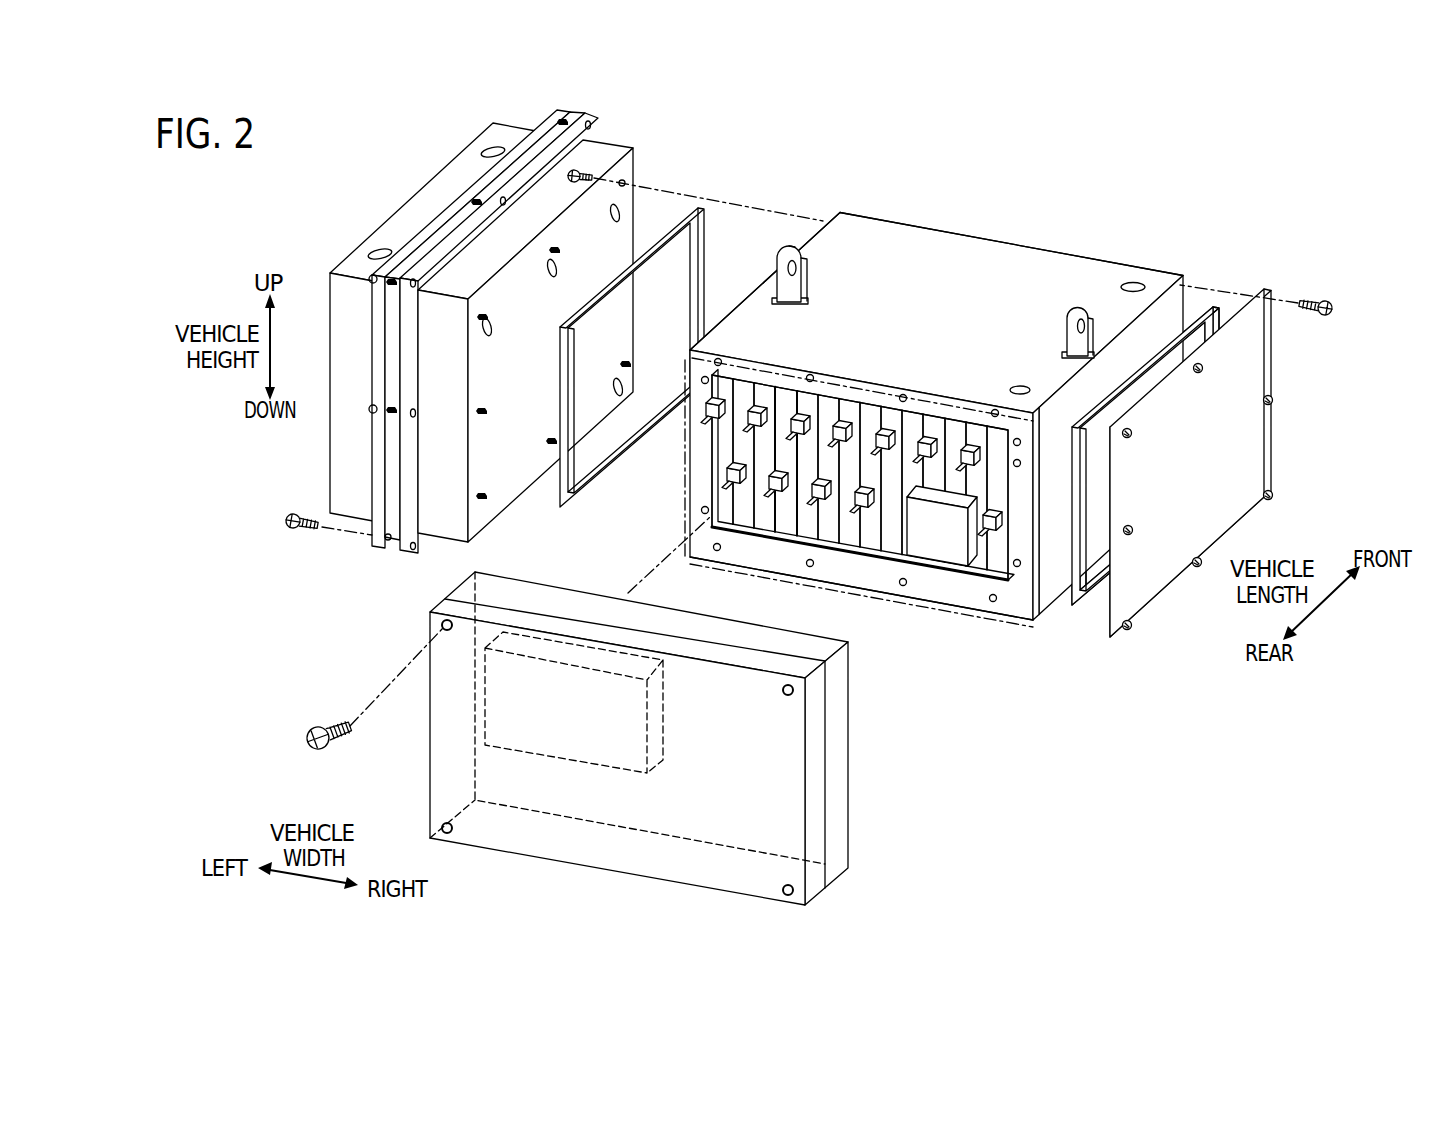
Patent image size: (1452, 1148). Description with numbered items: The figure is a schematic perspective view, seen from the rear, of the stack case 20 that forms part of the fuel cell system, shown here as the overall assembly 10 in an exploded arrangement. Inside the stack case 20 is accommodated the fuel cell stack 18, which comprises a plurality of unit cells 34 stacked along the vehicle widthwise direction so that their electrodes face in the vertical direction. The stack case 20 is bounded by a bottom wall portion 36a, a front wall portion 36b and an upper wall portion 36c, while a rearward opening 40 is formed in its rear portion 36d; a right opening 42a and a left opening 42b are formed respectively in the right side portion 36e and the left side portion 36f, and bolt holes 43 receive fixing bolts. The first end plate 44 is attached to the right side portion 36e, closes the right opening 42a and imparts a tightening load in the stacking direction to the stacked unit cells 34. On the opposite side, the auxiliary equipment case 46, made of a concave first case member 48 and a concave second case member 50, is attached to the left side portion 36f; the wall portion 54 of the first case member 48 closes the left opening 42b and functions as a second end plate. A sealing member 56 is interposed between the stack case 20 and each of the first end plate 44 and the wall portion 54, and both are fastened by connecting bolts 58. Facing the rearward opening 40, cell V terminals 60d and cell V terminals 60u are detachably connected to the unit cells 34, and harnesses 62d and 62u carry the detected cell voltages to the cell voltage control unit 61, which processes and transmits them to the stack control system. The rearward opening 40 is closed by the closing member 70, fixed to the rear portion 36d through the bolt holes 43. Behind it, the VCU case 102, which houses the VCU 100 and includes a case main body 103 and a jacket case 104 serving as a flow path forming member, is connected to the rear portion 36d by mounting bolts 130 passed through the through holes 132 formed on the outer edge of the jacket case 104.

The battery pack 10 is at (834, 390).
The fuel cell stack 18 is at (747, 400).
The stack case 20 is at (897, 416).
The unit cells 34 is at (880, 412).
The bottom wall portion 36a is at (902, 598).
The front wall portion 36b is at (992, 238).
The upper wall portion 36c is at (880, 238).
The rear portion 36d is at (700, 500).
The right side portion 36e is at (1052, 587).
The left side portion 36f is at (748, 297).
The rearward opening 40 is at (803, 392).
The right opening 42a is at (1117, 358).
The left opening 42b is at (820, 228).
The bolt holes 43 is at (700, 382).
The first end plate 44 is at (1250, 452).
The auxiliary equipment case 46 is at (481, 322).
The first case member 48 is at (548, 190).
The second case member 50 is at (502, 133).
The wall portion 54 is at (507, 478).
The sealing member 56 is at (700, 213).
The connecting bolts 58 is at (590, 160).
The cell V terminals 60u is at (972, 450).
The cell V terminals 60d is at (785, 478).
The cell voltage control unit 61 is at (957, 560).
The harnesses 62u is at (1000, 417).
The harnesses 62d is at (810, 500).
The closing member 70 is at (988, 613).
The VCU 100 is at (653, 722).
The VCU case 102 is at (635, 738).
The case main body 103 is at (547, 836).
The jacket case 104 is at (838, 753).
The mounting bolts 130 is at (305, 733).
The through holes 132 is at (440, 624).